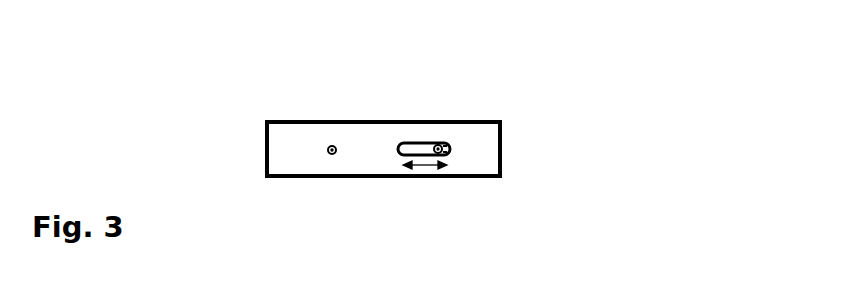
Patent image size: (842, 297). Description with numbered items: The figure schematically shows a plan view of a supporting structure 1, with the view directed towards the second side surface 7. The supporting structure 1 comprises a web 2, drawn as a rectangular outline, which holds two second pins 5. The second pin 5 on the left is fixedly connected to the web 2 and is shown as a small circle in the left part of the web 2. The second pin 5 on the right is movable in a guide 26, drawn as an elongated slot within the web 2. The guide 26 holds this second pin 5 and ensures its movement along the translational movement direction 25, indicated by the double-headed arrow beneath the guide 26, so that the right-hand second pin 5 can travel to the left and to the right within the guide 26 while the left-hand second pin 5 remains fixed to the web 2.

The supporting structure 1 is at (583, 110).
The web 2 is at (283, 130).
The second pin 5 is at (336, 138).
The second side surface 7 is at (265, 168).
The movement direction 25 is at (426, 166).
The guide 26 is at (449, 147).